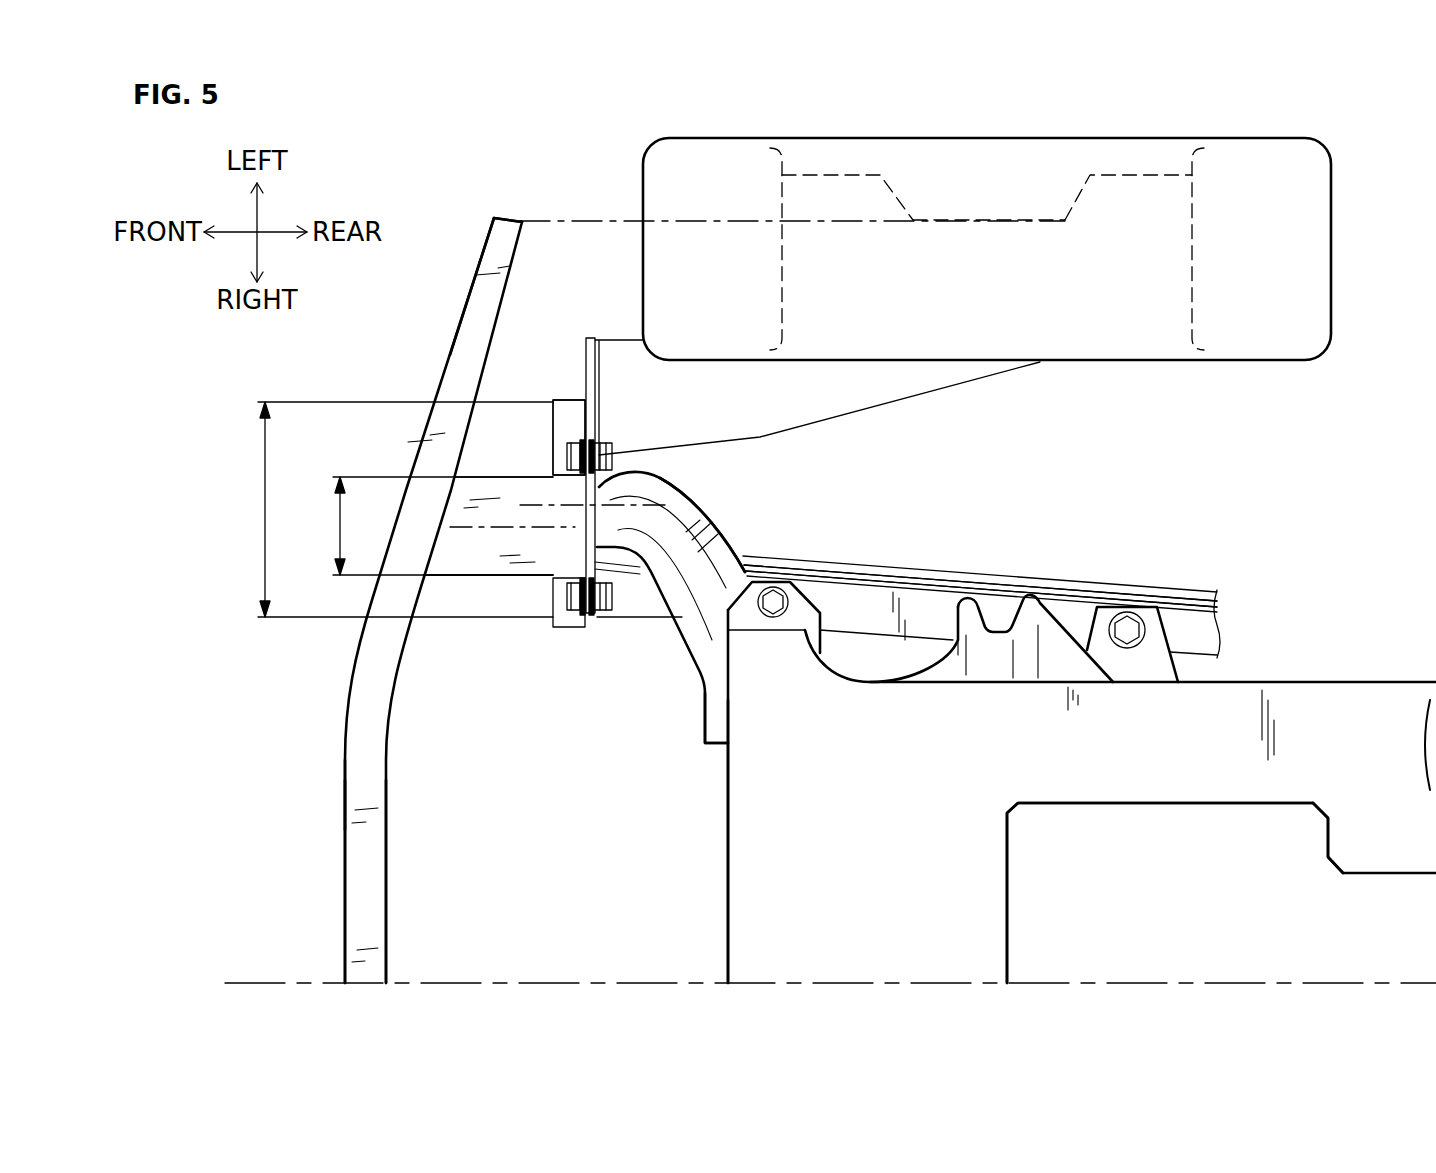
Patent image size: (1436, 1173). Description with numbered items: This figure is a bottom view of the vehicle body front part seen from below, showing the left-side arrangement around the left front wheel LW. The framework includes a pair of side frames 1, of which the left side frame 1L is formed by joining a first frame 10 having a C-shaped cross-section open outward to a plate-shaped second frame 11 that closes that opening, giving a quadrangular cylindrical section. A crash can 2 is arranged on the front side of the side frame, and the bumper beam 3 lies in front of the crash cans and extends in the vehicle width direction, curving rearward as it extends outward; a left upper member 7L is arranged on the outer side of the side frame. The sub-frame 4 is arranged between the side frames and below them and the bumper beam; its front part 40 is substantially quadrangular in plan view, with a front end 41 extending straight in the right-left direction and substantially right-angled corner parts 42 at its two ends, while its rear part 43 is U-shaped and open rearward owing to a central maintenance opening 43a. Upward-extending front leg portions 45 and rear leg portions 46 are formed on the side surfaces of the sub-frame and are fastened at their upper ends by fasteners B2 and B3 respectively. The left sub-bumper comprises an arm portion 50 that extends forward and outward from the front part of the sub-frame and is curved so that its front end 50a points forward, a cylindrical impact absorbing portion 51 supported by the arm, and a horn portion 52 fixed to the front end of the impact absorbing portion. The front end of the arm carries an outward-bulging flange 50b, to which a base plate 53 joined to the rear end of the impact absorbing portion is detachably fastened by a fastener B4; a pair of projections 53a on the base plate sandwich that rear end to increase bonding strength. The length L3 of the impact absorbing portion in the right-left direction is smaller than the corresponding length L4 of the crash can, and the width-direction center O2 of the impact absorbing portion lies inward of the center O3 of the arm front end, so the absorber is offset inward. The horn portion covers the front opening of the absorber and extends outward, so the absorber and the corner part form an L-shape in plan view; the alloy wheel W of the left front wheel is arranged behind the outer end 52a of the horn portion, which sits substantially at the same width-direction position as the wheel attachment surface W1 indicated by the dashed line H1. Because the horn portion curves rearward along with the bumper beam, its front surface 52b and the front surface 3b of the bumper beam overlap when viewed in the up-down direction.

The side frames 1 is at (1004, 578).
The left side frame 1L is at (953, 566).
The crash cans 2 is at (497, 600).
The bumper beam 3 is at (360, 860).
The front surface of the bumper beam 3b is at (340, 797).
The sub-frame 4 is at (1357, 695).
The left upper member 7L is at (870, 402).
The first frame 10 is at (1188, 635).
The second frame 11 is at (1185, 596).
The front part of the sub-frame 40 is at (765, 918).
The front end of the front part 41 is at (727, 813).
The corner parts 42 is at (718, 652).
The rear part of the sub-frame 43 is at (1130, 805).
The maintenance opening 43a is at (1220, 805).
The front leg portions 45 is at (805, 610).
The rear leg portions 46 is at (1100, 630).
The arm portion 50 is at (655, 590).
The front end of the arm portion 50a is at (680, 510).
The flange 50b is at (610, 350).
The impact absorbing portion 51 is at (513, 500).
The horn portion 52 is at (457, 363).
The outer end of the horn portion 52a is at (500, 226).
The front surface of the horn portion 52b is at (460, 300).
The base plate 53 is at (565, 615).
The projections 53a is at (553, 450).
The fastener B2 is at (773, 602).
The fastener B3 is at (1127, 630).
The fastener B4 is at (578, 440).
The dashed line H1 is at (608, 216).
The length in the right-left direction of the impact absorbing portion L3 is at (428, 526).
The length in the right-left direction of the left crash can L4 is at (390, 509).
The left front wheel LW is at (1314, 242).
The center in the vehicle width direction of the impact absorbing portion O2 is at (483, 530).
The center in the vehicle width direction of the front end of the arm portion O3 is at (655, 487).
The alloy wheel W is at (1000, 200).
The attachment surface W1 is at (968, 210).